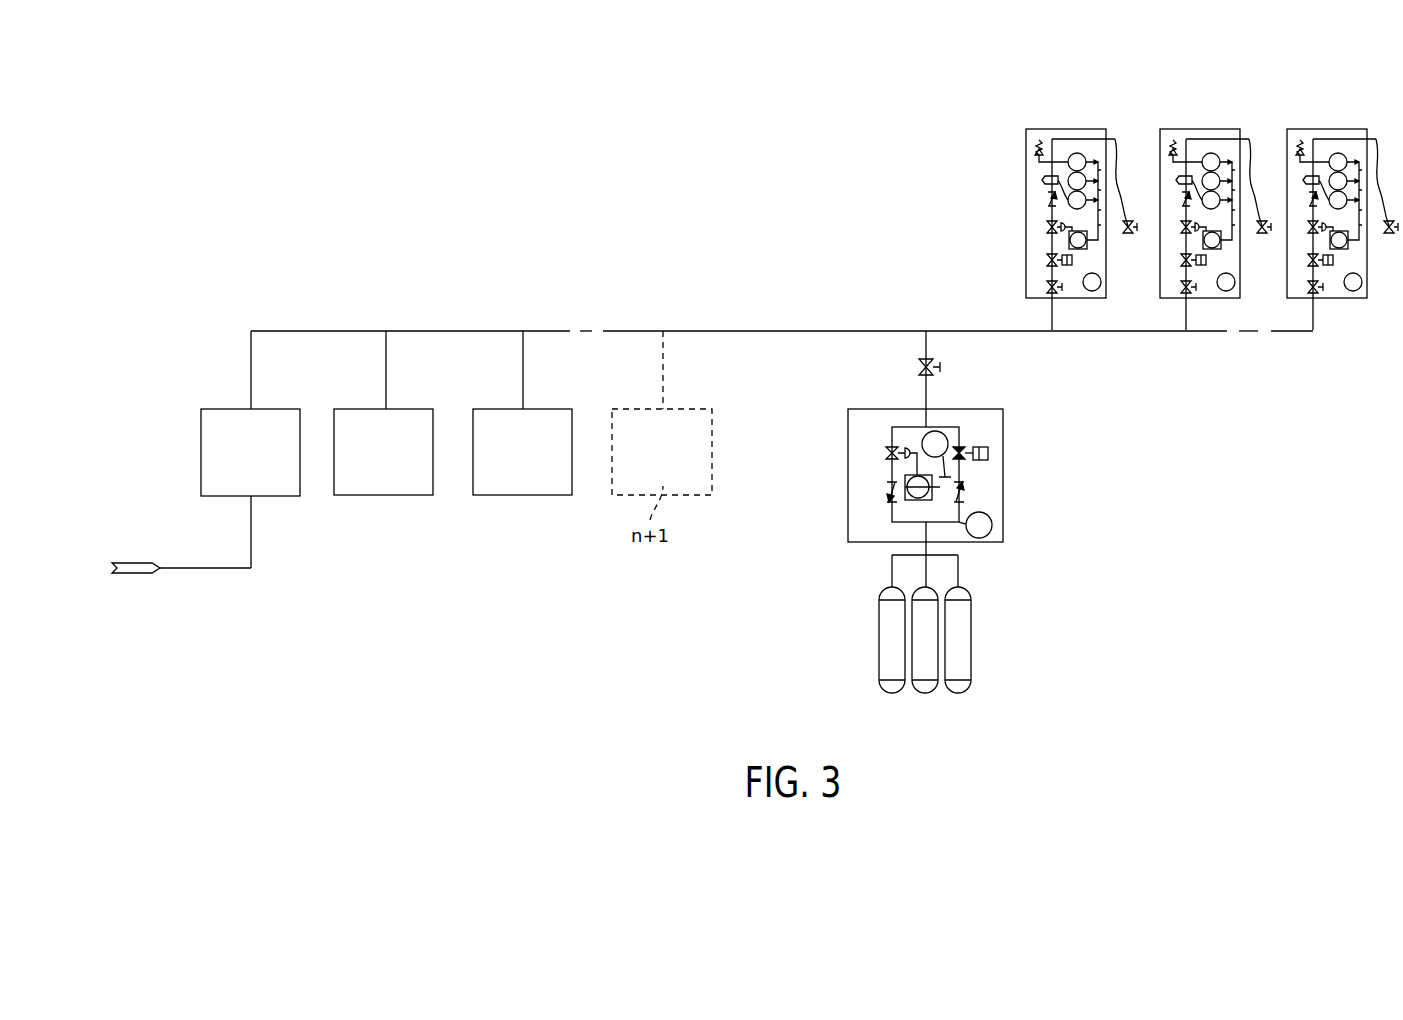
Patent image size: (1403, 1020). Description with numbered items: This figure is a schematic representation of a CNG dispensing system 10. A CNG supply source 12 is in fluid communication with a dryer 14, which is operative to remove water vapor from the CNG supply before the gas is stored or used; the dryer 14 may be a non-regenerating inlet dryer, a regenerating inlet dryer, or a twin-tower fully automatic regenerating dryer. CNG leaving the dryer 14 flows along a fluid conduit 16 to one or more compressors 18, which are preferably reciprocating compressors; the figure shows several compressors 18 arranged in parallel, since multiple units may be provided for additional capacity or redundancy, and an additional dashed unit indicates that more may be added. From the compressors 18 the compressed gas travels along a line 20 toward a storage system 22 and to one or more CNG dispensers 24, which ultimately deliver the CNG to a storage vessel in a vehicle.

The CNG dispensing system 10 is at (490, 235).
The CNG supply source 12 is at (135, 578).
The dryer 14 is at (214, 444).
The fluid conduit 16 is at (320, 330).
The compressor 18 is at (391, 483).
The distribution line 20 is at (767, 330).
The storage system 22 is at (1037, 559).
The CNG dispenser 24 is at (1212, 199).